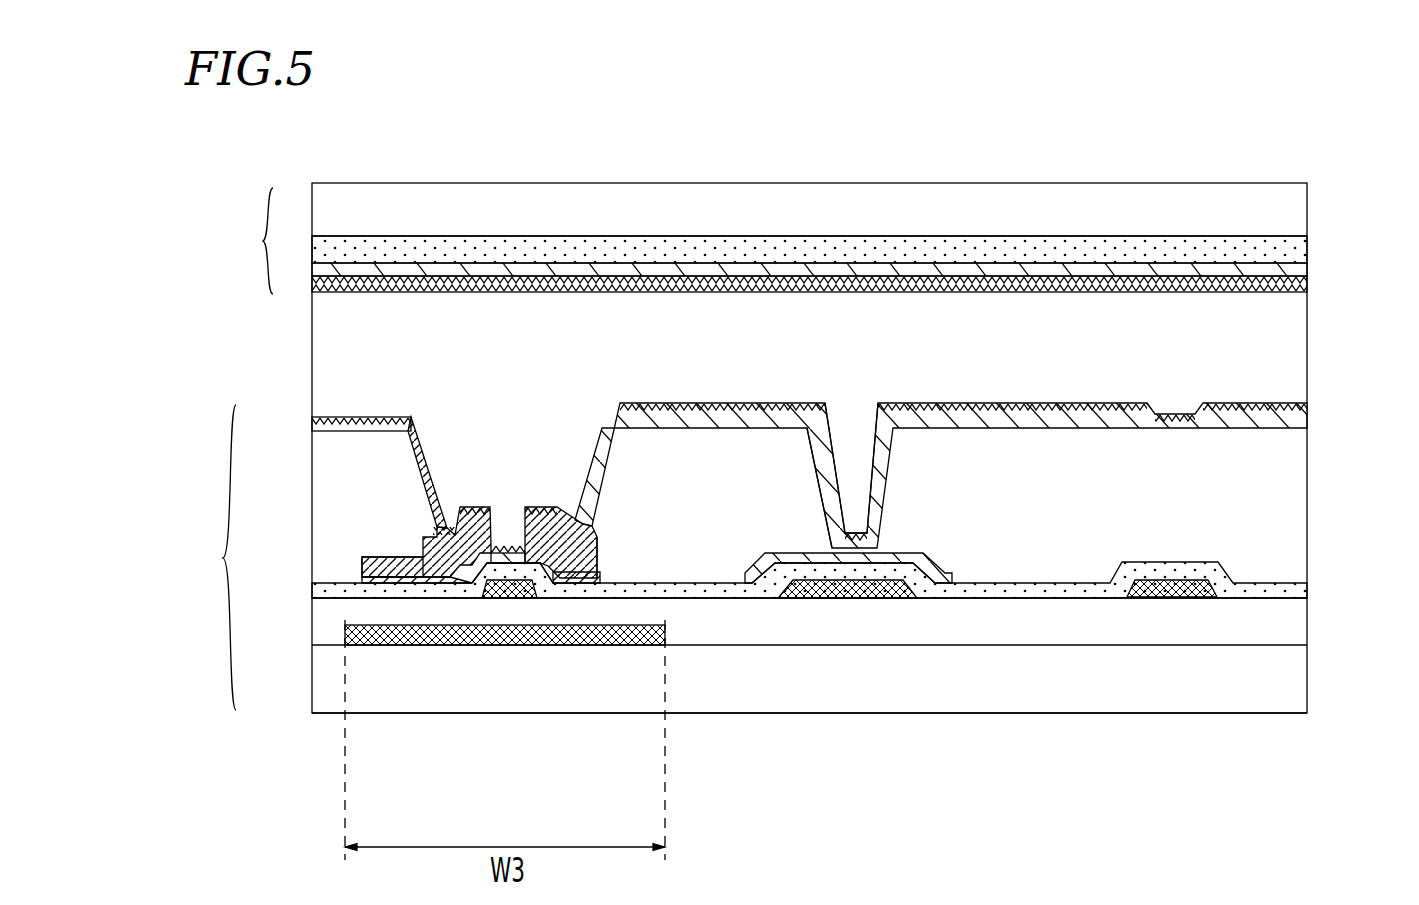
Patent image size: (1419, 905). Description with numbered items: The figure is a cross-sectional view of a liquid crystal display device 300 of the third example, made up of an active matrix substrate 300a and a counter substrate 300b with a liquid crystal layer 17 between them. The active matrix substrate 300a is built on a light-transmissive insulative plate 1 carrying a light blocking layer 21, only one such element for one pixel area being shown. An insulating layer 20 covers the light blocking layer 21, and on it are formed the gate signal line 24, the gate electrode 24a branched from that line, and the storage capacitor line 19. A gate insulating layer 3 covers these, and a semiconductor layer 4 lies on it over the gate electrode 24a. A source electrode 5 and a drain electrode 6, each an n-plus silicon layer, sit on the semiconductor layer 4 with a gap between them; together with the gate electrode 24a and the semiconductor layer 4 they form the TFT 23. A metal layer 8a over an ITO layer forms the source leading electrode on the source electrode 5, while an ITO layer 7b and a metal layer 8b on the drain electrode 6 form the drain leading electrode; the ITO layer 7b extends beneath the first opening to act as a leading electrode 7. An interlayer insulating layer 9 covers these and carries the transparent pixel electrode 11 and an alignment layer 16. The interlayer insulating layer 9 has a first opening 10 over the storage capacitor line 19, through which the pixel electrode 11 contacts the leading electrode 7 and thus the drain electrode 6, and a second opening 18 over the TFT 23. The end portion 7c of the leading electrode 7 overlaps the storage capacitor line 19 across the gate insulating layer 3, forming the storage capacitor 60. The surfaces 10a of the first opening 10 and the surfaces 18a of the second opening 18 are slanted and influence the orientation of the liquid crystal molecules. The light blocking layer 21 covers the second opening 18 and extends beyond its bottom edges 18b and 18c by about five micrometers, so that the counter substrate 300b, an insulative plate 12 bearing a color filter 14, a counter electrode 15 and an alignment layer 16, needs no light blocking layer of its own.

The insulative plate 1 is at (1082, 690).
The gate insulating layer 3 is at (740, 590).
The semiconductor layer 4 is at (467, 583).
The source electrode 5 is at (443, 583).
The drain electrode 6 is at (550, 582).
The leading electrode 7 is at (697, 583).
The ITO layer 7b is at (577, 575).
The end portion of the leading electrode 7c is at (935, 583).
The metal layer 8a is at (390, 580).
The metal layer 8b is at (620, 565).
The interlayer insulating layer 9 is at (1287, 520).
The first opening 10 is at (848, 544).
The surfaces of the first opening 10a is at (823, 493).
The pixel electrode 11 is at (1000, 428).
The insulative plate 12 is at (630, 215).
The color filter 14 is at (797, 245).
The counter electrode 15 is at (1003, 265).
The alignment layer 16 is at (1307, 285).
The liquid crystal layer 17 is at (338, 369).
The second opening 18 is at (779, 540).
The surfaces of the second opening 18a is at (418, 478).
The bottom edge of the second opening 18b is at (441, 520).
The bottom edge of the second opening 18c is at (578, 520).
The storage capacitor line 19 is at (842, 598).
The insulating layer 20 is at (330, 622).
The light blocking layer 21 is at (360, 645).
The TFT 23 is at (510, 494).
The gate signal line 24 is at (1168, 598).
The gate electrode 24a is at (500, 598).
The storage capacitor 60 is at (881, 612).
The liquid crystal display device 300 is at (1412, 138).
The active matrix substrate 300a is at (197, 557).
The counter substrate 300b is at (234, 241).